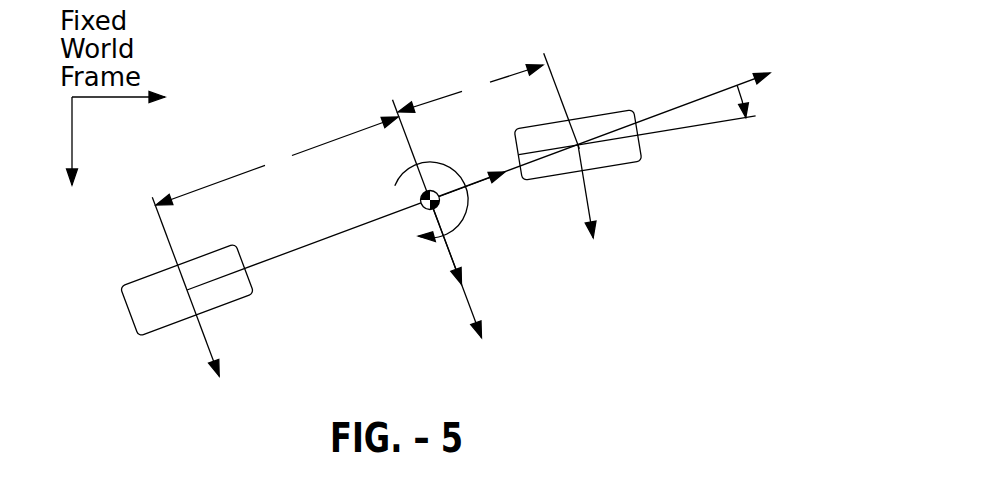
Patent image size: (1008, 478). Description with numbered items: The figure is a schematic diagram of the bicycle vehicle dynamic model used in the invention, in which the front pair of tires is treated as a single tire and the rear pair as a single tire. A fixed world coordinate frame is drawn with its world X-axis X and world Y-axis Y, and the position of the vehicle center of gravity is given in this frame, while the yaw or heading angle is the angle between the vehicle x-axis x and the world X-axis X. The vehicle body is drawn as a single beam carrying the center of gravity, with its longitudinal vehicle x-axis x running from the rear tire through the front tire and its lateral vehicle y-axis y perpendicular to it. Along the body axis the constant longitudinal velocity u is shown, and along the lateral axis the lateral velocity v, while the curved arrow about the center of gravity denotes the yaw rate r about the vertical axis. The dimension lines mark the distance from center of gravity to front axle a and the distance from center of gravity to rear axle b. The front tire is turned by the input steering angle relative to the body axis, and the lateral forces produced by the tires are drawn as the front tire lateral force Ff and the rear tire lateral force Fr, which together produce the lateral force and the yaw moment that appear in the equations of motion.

The world X-axis X is at (129, 100).
The world Y-axis Y is at (70, 161).
The vehicle x-axis x is at (478, 166).
The vehicle y-axis y is at (447, 219).
The longitudinal velocity u is at (467, 173).
The lateral velocity v is at (456, 242).
The yaw rate r is at (431, 209).
The distance from center of gravity to front axle a is at (470, 89).
The distance from center of gravity to rear axle b is at (277, 161).
The front tire lateral force Ff is at (593, 218).
The rear tire lateral force Fr is at (199, 313).